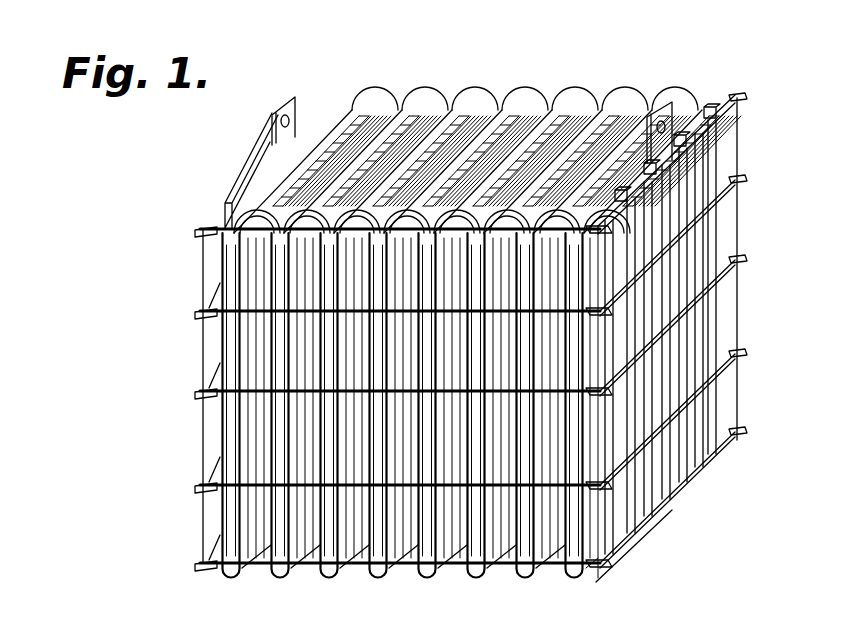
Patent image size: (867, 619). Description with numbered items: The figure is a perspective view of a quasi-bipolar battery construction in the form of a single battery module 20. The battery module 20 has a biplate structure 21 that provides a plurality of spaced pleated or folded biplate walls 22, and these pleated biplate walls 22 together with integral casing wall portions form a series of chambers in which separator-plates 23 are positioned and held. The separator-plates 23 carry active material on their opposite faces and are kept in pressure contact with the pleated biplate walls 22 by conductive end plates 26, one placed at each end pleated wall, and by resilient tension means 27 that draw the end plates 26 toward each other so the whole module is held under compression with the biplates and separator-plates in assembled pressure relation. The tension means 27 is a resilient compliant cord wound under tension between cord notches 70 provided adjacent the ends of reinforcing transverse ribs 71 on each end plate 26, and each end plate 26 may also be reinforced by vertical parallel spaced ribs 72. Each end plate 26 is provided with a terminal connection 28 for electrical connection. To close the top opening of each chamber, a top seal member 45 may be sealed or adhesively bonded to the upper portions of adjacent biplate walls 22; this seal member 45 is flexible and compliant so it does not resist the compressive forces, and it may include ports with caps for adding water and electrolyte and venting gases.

The battery module 20 is at (238, 150).
The biplate structure 21 is at (627, 80).
The pleated biplate walls 22 is at (555, 118).
The separator-plates 23 is at (480, 107).
The conductive end plates 26 is at (702, 218).
The resilient tension means 27 is at (740, 121).
The terminal connection 28 is at (290, 97).
The top seal member 45 is at (410, 130).
The cord notches 70 is at (737, 357).
The reinforcing transverse ribs 71 is at (700, 307).
The vertical parallel spaced ribs 72 is at (714, 419).